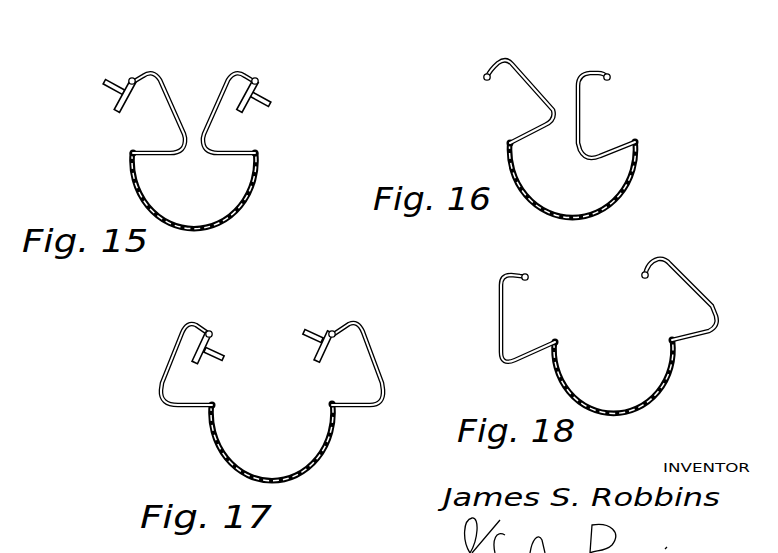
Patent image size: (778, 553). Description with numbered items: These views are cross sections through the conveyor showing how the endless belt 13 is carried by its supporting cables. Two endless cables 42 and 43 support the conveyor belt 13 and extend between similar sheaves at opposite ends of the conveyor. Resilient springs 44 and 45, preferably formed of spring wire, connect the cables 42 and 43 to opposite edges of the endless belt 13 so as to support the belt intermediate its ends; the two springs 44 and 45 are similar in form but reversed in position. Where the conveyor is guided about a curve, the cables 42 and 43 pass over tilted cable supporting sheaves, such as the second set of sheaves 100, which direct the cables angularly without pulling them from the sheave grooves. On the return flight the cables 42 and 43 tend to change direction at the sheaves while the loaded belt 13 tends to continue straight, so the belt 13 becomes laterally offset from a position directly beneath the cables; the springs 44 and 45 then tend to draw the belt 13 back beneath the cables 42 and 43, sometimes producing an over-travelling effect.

In FIG. 15, the conveyor belt 13 is at (255, 195).
In FIG. 16, the conveyor belt 13 is at (628, 193).
In FIG. 17, the conveyor belt 13 is at (228, 462).
In FIG. 18, the conveyor belt 13 is at (644, 405).
In FIG. 15, the endless cable 42 is at (131, 78).
In FIG. 16, the endless cable 42 is at (484, 75).
In FIG. 17, the endless cable 42 is at (210, 331).
In FIG. 18, the endless cable 42 is at (545, 259).
In FIG. 15, the endless cable 43 is at (257, 79).
In FIG. 16, the endless cable 43 is at (611, 73).
In FIG. 17, the endless cable 43 is at (332, 330).
In FIG. 18, the endless cable 43 is at (642, 274).
In FIG. 15, the resilient spring 44 is at (165, 74).
In FIG. 16, the resilient spring 44 is at (534, 75).
In FIG. 17, the resilient spring 44 is at (161, 373).
In FIG. 18, the resilient spring 44 is at (500, 320).
In FIG. 15, the resilient spring 45 is at (222, 74).
In FIG. 16, the resilient spring 45 is at (584, 105).
In FIG. 17, the resilient spring 45 is at (384, 367).
In FIG. 18, the resilient spring 45 is at (699, 282).
In FIG. 15, the second set of sheaves 100 is at (115, 105).
In FIG. 17, the second set of sheaves 100 is at (262, 347).